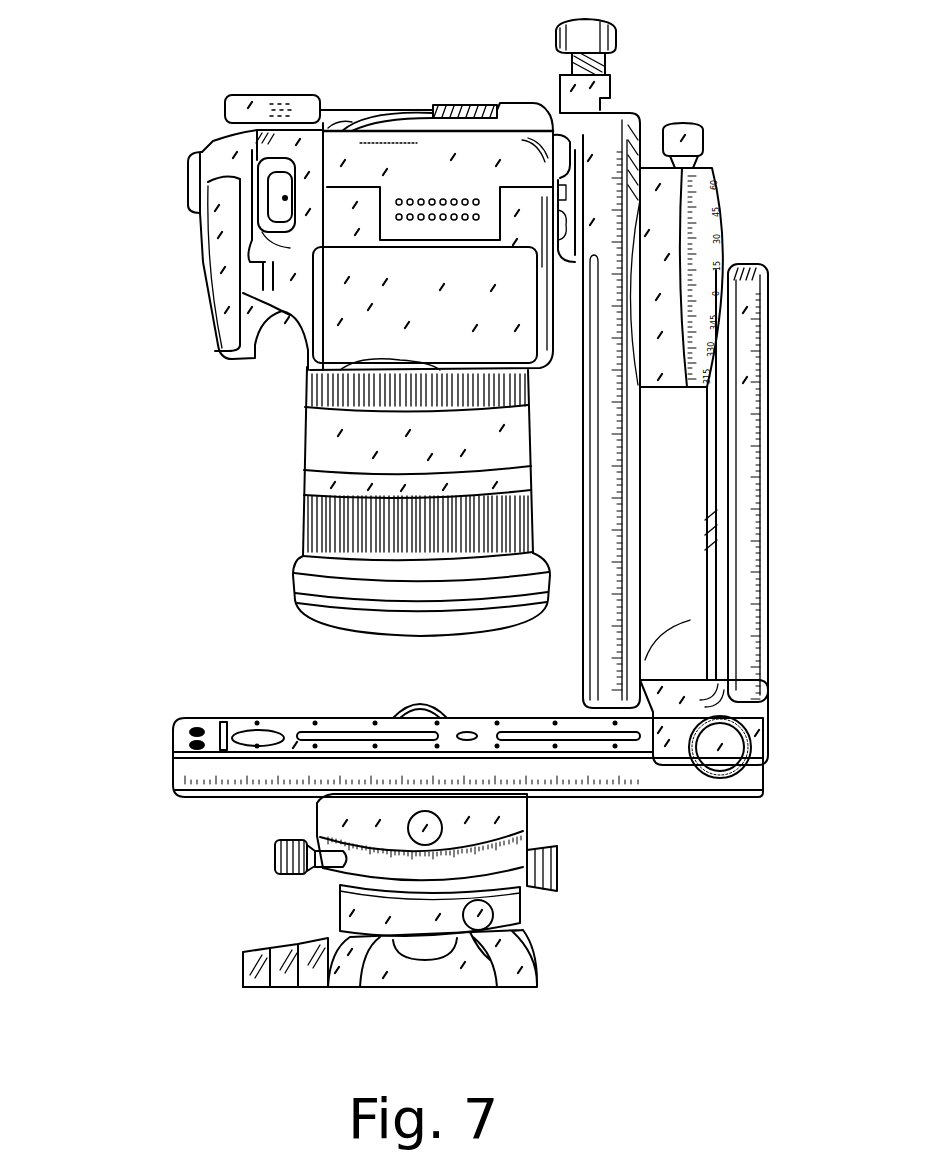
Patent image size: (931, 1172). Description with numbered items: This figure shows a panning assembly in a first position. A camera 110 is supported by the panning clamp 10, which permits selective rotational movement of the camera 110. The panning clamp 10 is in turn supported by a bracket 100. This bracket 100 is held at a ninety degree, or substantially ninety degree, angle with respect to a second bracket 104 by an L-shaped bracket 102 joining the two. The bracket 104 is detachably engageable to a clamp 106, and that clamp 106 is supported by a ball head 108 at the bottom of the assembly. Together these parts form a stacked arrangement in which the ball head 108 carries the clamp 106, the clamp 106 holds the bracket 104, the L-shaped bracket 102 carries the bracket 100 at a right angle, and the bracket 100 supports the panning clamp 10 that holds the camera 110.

The panning clamp 10 is at (612, 90).
The bracket 100 is at (770, 451).
The L-shaped bracket 102 is at (770, 740).
The bracket 104 is at (228, 725).
The clamp 106 is at (300, 808).
The ball head 108 is at (472, 967).
The camera 110 is at (155, 167).